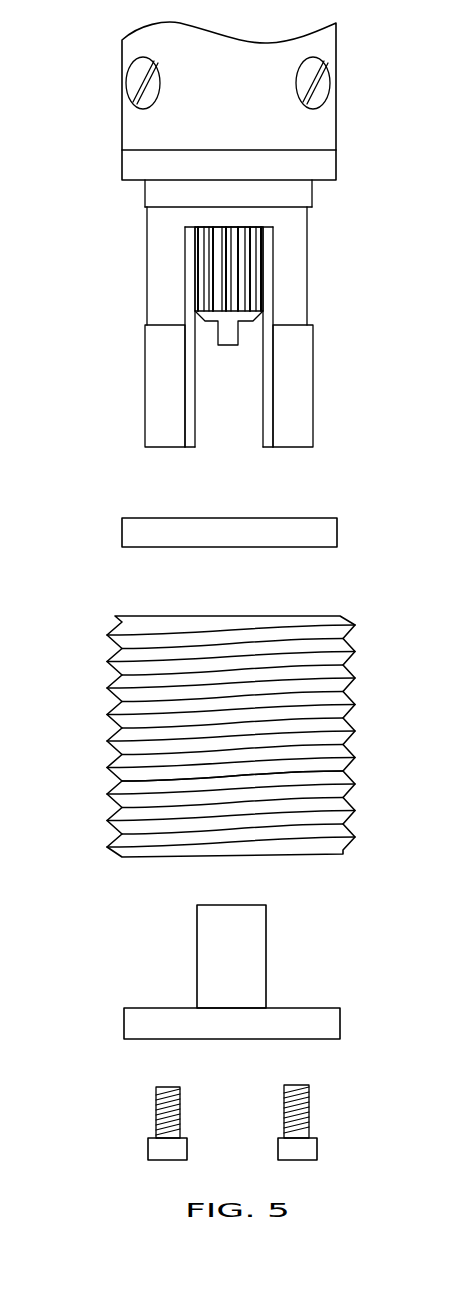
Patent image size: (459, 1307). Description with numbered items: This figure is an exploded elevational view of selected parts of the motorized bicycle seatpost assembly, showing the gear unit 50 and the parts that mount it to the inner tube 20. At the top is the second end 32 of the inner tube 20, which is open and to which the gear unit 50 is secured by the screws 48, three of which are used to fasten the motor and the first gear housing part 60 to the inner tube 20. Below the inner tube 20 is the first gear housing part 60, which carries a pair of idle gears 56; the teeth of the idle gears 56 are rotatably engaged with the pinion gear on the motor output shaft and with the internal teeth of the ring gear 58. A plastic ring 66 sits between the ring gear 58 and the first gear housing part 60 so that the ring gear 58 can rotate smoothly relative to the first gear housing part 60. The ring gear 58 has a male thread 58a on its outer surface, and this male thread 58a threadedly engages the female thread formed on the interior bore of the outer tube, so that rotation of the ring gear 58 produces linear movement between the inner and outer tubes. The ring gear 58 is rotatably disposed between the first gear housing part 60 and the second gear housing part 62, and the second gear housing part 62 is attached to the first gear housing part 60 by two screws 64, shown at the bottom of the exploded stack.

The inner tube 20 is at (337, 47).
The second end 32 is at (300, 150).
The screws 48 is at (305, 90).
The gear unit 50 is at (116, 390).
The idle gears 56 is at (217, 268).
The ring gear 58 is at (355, 698).
The male thread 58a is at (318, 768).
The first gear housing part 60 is at (314, 395).
The second gear housing part 62 is at (341, 1026).
The screws 64 is at (277, 1150).
The plastic ring 66 is at (293, 518).